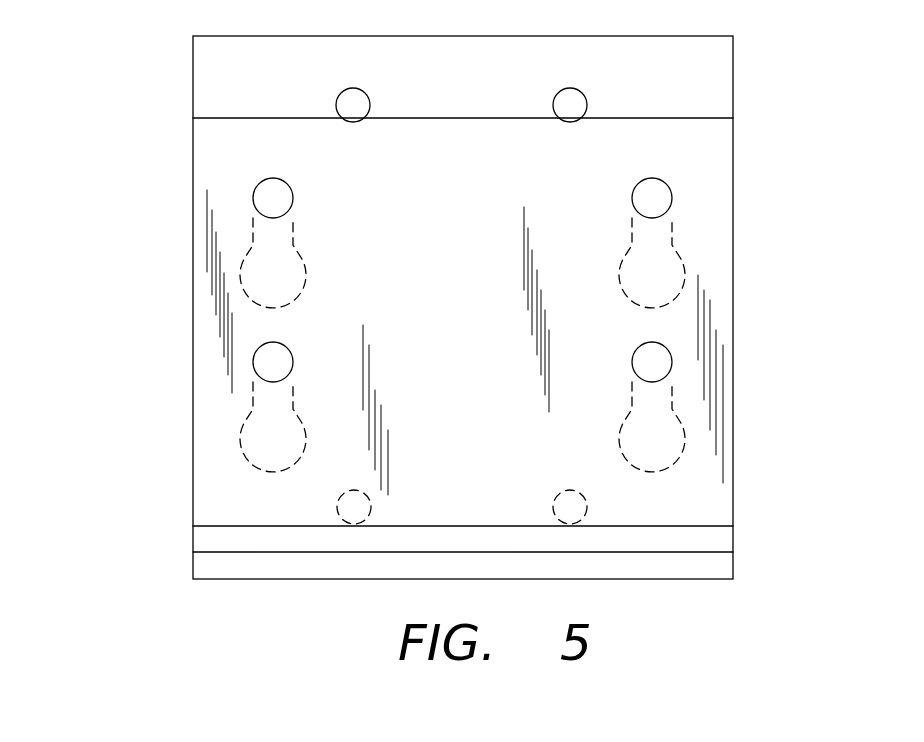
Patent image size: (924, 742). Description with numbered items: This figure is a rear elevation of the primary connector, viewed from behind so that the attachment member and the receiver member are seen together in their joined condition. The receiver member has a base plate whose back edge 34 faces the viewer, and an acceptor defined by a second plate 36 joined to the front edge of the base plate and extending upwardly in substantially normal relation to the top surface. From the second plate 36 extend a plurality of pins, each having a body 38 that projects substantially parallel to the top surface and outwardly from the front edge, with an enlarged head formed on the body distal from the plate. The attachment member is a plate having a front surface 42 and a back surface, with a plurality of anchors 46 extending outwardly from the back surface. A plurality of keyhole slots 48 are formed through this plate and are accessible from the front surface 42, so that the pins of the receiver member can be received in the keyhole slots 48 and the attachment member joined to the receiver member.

The back edge 34 is at (710, 540).
The second plate 36 is at (227, 157).
The body 38 is at (658, 199).
The front surface 42 is at (225, 70).
The anchors 46 is at (580, 103).
The keyhole slots 48 is at (687, 276).